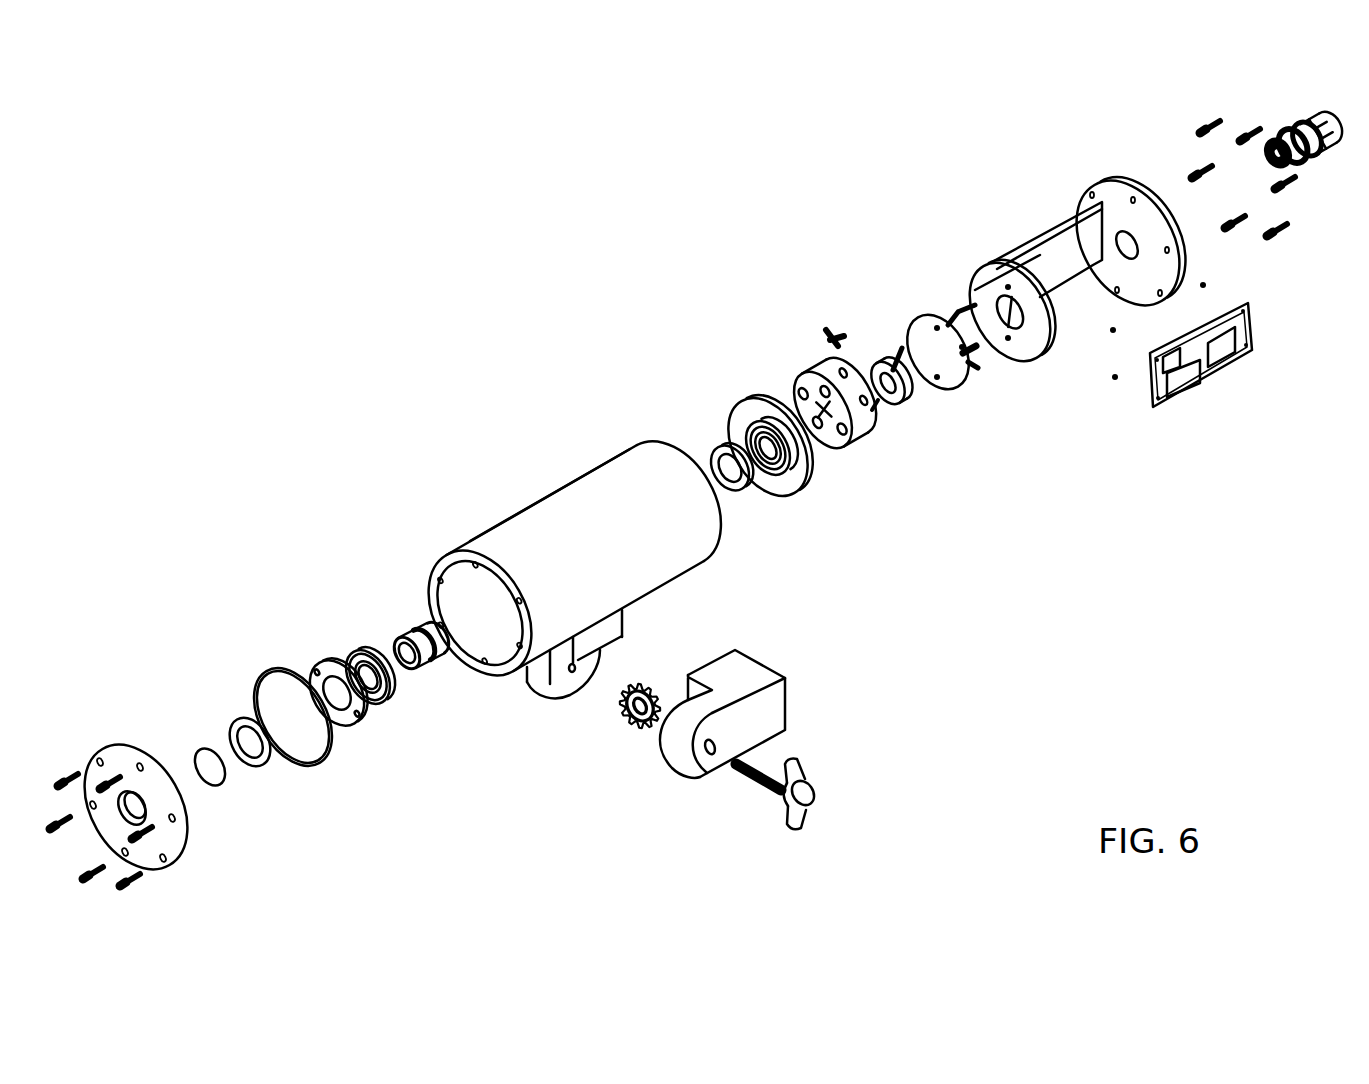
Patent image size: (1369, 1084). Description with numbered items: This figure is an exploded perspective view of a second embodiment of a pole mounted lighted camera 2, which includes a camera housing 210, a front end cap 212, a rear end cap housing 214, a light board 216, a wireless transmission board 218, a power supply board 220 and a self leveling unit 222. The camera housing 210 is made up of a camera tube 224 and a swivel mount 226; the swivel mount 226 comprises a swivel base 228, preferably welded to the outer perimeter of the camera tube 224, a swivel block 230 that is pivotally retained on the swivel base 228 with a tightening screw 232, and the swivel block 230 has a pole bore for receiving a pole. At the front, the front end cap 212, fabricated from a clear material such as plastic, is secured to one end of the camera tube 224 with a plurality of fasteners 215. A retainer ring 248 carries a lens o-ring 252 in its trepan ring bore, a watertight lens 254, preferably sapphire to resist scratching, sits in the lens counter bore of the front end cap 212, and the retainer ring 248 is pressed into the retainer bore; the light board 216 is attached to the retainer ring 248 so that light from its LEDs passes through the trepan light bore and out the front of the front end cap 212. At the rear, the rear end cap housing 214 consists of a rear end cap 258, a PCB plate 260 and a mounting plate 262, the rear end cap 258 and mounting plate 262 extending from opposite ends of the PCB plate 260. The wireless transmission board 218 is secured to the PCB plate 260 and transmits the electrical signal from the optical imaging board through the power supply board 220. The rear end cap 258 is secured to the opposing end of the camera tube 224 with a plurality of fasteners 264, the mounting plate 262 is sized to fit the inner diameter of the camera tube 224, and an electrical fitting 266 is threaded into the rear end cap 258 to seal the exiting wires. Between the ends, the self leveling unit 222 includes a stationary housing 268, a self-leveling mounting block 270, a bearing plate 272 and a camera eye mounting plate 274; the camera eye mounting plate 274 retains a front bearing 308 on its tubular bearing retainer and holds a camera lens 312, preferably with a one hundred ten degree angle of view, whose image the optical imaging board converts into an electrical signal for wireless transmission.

The pole mounted lighted camera 2 is at (1088, 573).
The camera housing 210 is at (548, 478).
The front end cap 212 is at (120, 740).
The rear end cap housing 214 is at (1043, 195).
The fasteners 215 is at (130, 883).
The light board 216 is at (335, 662).
The wireless transmission board 218 is at (1210, 380).
The power supply board 220 is at (912, 312).
The self leveling unit 222 is at (863, 468).
The camera tube 224 is at (508, 518).
The swivel mount 226 is at (585, 752).
The swivel base 228 is at (538, 677).
The swivel block 230 is at (787, 698).
The tightening screw 232 is at (790, 827).
The retainer ring 248 is at (387, 693).
The lens o-ring 252 is at (260, 763).
The watertight lens 254 is at (213, 777).
The rear end cap 258 is at (1123, 185).
The PCB plate 260 is at (1016, 252).
The mounting plate 262 is at (1018, 363).
The fasteners 264 is at (1273, 237).
The electrical fitting 266 is at (1307, 112).
The stationary housing 268 is at (875, 432).
The self-leveling mounting block 270 is at (815, 453).
The bearing plate 272 is at (740, 405).
The camera eye mounting plate 274 is at (762, 457).
The front bearing 308 is at (713, 452).
The camera lens 312 is at (407, 630).